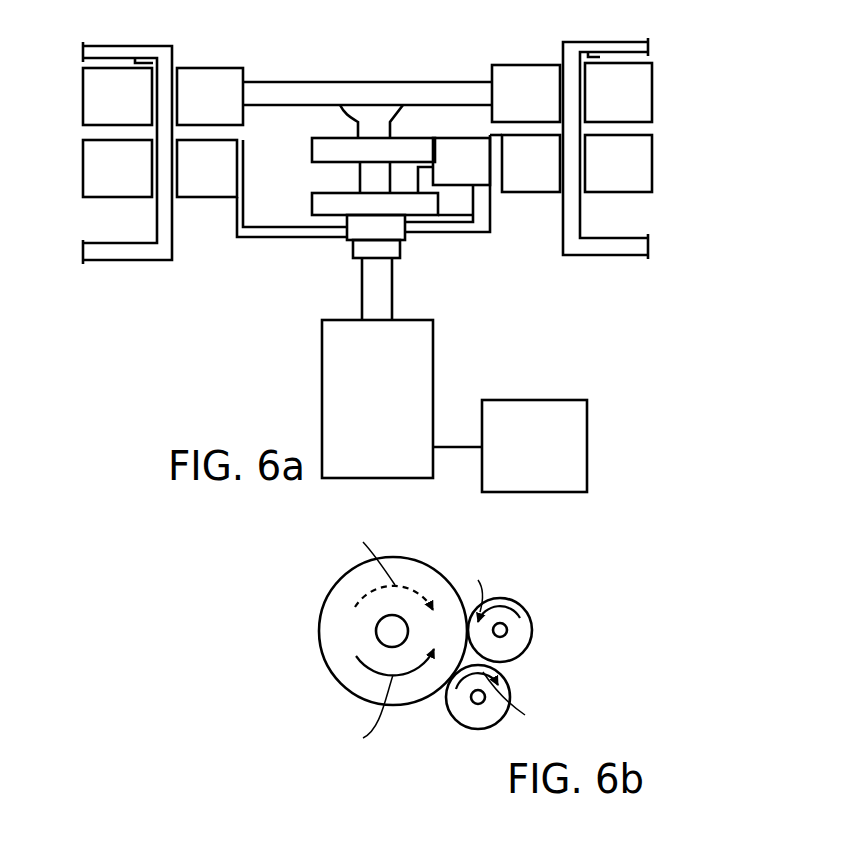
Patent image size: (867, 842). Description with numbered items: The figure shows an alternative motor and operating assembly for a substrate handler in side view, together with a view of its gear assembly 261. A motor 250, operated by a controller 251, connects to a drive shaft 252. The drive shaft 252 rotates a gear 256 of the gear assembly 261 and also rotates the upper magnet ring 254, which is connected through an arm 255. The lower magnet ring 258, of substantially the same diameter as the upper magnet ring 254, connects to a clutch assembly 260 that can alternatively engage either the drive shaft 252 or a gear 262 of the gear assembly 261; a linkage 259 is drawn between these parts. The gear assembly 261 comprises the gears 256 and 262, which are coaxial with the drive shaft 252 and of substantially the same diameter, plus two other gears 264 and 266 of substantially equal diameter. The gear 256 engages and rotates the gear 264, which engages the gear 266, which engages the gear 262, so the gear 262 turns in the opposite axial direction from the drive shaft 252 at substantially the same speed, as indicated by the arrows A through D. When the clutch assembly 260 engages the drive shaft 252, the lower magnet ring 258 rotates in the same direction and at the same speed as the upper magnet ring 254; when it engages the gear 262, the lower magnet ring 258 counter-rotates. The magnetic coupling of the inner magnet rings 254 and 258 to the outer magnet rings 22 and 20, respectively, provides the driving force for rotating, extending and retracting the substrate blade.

In FIG. 6a, the outer magnet ring 20 is at (140, 198).
In FIG. 6a, the outer magnet ring 22 is at (113, 65).
In FIG. 6a, the motor 250 is at (433, 368).
In FIG. 6a, the controller 251 is at (517, 398).
In FIG. 6a, the drive shaft 252 is at (355, 125).
In FIG. 6b, the drive shaft 252 is at (377, 630).
In FIG. 6a, the upper magnet ring 254 is at (222, 68).
In FIG. 6a, the arm 255 is at (407, 82).
In FIG. 6a, the gear 256 is at (313, 138).
In FIG. 6b, the gear 256 is at (330, 598).
In FIG. 6a, the lower magnet ring 258 is at (203, 197).
In FIG. 6a, the linkage 259 is at (272, 228).
In FIG. 6a, the clutch assembly 260 is at (350, 248).
In FIG. 6a, the gear assembly 261 is at (415, 133).
In FIG. 6b, the gear assembly 261 is at (305, 745).
In FIG. 6a, the gear 262 is at (330, 216).
In FIG. 6b, the gear 262 is at (337, 685).
In FIG. 6a, the gear 264 is at (482, 188).
In FIG. 6b, the gear 264 is at (500, 598).
In FIG. 6a, the gear 266 is at (448, 223).
In FIG. 6b, the gear 266 is at (466, 727).